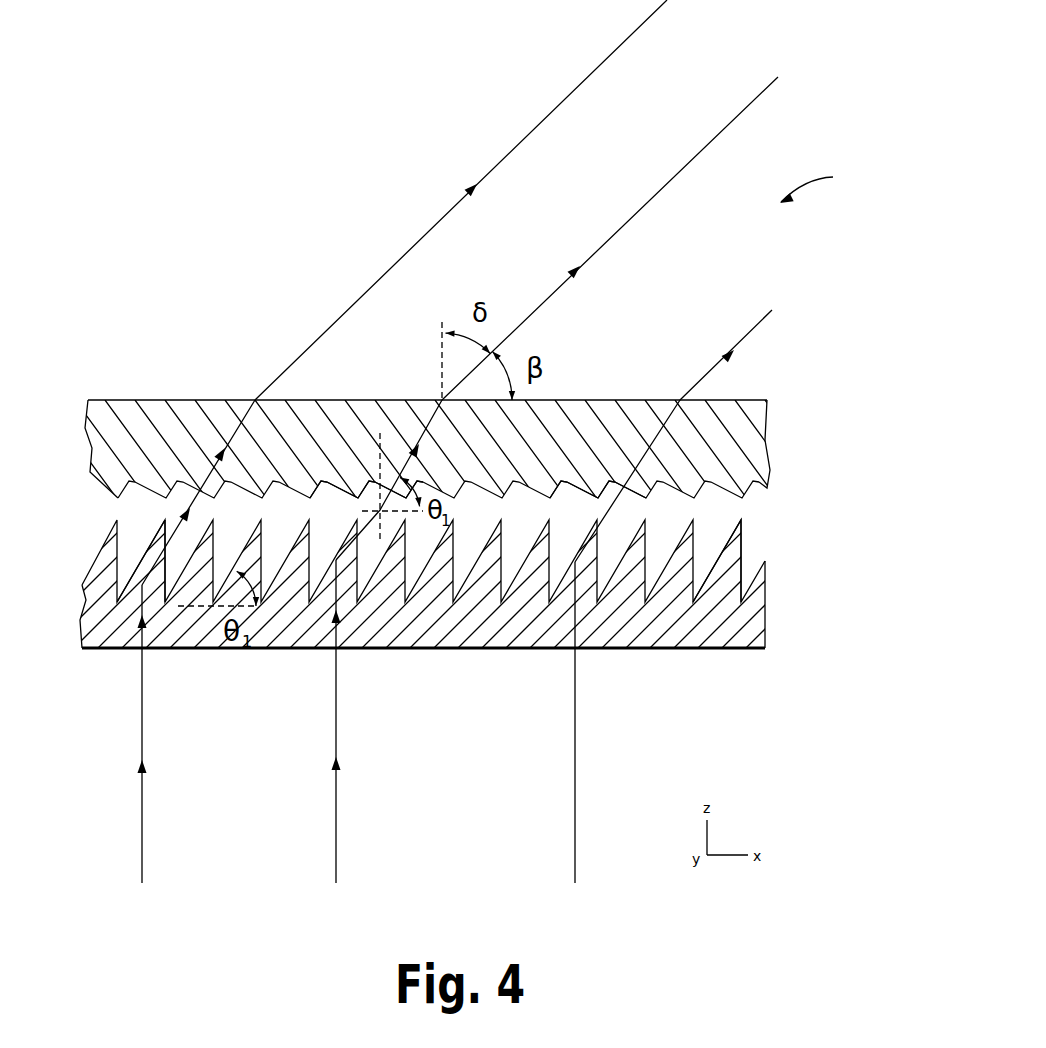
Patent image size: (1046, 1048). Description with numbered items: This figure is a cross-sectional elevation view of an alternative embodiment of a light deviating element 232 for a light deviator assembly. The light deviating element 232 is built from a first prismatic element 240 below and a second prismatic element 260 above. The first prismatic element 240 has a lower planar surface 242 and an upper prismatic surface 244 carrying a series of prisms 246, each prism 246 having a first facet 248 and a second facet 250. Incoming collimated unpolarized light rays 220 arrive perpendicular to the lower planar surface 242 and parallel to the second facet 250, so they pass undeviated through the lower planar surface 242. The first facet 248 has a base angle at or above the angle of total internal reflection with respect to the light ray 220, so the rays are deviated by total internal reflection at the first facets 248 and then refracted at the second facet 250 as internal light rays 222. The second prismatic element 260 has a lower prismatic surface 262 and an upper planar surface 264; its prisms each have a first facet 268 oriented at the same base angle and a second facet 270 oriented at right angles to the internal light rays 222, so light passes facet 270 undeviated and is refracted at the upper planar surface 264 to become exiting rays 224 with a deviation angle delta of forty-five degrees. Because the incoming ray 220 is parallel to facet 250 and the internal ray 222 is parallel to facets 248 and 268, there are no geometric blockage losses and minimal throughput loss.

The incoming collimated unpolarized light rays 220 is at (574, 701).
The internal light rays 222 is at (411, 523).
The exiting rays 224 is at (634, 214).
The light deviating element 232 is at (829, 184).
The first prismatic element 240 is at (438, 602).
The lower planar surface 242 is at (737, 650).
The upper prismatic surface 244 is at (440, 548).
The prisms 246 is at (737, 537).
The first facet 248 is at (133, 587).
The second facet 250 is at (183, 540).
The second prismatic element 260 is at (429, 433).
The lower prismatic surface 262 is at (479, 464).
The upper planar surface 264 is at (551, 399).
The first facet 268 is at (367, 485).
The second facet 270 is at (627, 477).